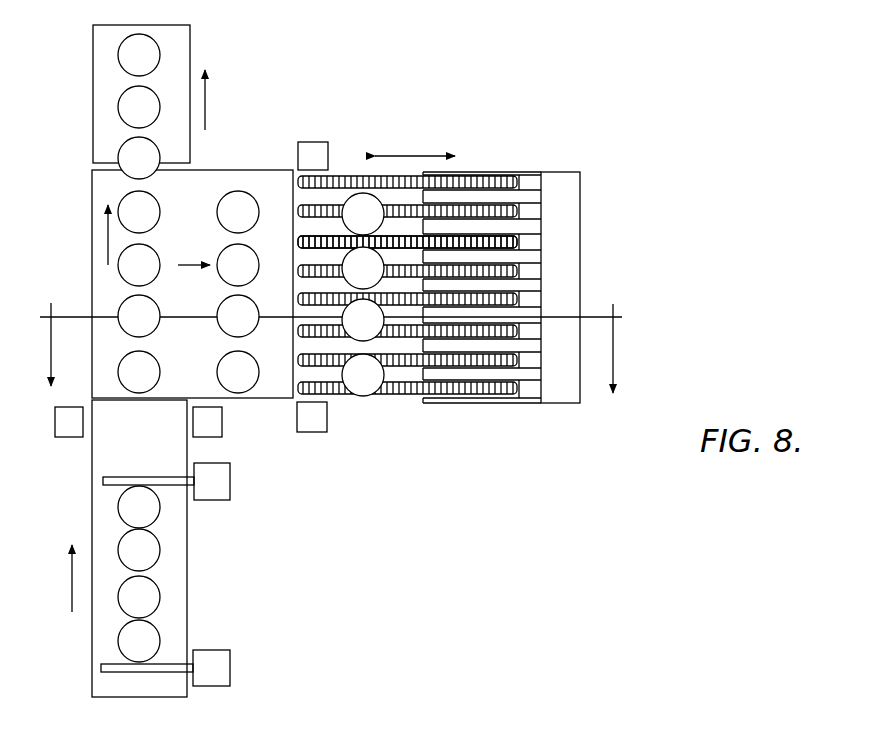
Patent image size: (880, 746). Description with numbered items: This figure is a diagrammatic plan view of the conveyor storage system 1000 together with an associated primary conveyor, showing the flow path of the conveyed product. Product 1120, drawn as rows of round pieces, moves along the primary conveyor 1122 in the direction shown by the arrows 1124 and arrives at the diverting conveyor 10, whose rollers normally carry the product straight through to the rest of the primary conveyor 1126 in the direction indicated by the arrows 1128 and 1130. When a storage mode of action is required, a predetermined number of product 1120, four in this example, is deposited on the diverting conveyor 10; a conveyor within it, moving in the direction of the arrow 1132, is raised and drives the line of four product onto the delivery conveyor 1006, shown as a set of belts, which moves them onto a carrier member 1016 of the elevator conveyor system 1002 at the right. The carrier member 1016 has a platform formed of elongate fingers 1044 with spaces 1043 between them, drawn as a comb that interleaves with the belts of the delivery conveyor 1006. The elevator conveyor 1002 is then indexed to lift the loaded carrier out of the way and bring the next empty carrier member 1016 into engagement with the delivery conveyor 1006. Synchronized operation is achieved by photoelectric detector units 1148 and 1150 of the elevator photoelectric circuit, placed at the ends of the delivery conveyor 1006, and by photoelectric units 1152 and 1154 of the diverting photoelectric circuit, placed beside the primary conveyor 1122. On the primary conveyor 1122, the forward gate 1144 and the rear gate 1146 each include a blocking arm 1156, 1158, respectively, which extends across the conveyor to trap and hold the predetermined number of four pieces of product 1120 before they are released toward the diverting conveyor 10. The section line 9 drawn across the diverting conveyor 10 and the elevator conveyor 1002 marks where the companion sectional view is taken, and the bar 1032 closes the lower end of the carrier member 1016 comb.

The section line 9- 9 is at (331, 336).
The diverting conveyor 10 is at (222, 163).
The conveyor storage system 1000 is at (484, 67).
The elevator conveyor system 1002 is at (570, 173).
The delivery conveyor system 1006 is at (352, 175).
The carrier member 1016 is at (487, 172).
The bottom bar of comb frame 1032 is at (488, 400).
The spaces 1043 is at (520, 242).
The elongate fingers 1044 is at (500, 258).
The product 1120 is at (218, 216).
The primary conveyor 1122 is at (188, 628).
The arrows 1124 is at (72, 598).
The primary conveyor 1126 is at (185, 52).
The arrows 1128 is at (108, 240).
The arrows 1130 is at (206, 104).
The arrow 1132 is at (183, 268).
The forward gate 1144 is at (231, 482).
The rear gate 1146 is at (231, 670).
The photoelectric detector unit 1148 is at (327, 416).
The photoelectric detector unit 1150 is at (312, 142).
The photoelectric unit 1152 is at (64, 437).
The photoelectric unit 1154 is at (222, 420).
The blocking arm 1156 is at (140, 477).
The blocking arm 1158 is at (148, 672).